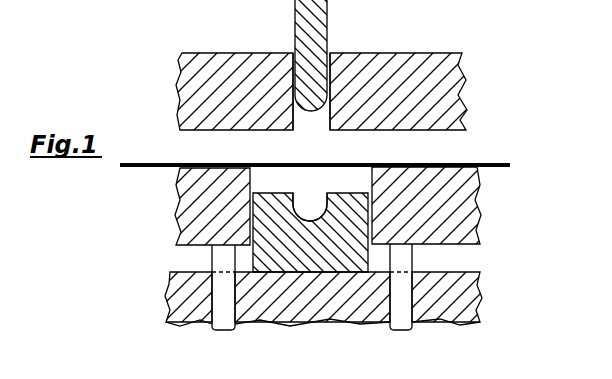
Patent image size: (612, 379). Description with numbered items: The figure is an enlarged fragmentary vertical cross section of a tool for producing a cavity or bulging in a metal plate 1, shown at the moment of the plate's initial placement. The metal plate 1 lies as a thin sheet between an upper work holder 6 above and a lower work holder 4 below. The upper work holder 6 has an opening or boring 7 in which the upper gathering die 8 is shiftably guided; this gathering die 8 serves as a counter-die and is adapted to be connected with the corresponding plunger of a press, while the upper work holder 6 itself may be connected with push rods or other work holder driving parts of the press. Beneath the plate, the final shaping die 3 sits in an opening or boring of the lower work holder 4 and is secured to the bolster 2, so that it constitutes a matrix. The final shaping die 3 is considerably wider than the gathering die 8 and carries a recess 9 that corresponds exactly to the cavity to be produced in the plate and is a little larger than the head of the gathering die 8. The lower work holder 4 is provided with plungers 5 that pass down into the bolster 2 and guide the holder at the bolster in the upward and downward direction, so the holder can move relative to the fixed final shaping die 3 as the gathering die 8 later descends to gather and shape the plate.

The metal plate 1 is at (488, 162).
The bolster 2 is at (465, 297).
The final shaping die 3 is at (325, 253).
The lower work holder 4 is at (200, 207).
The plungers 5 is at (224, 330).
The upper work holder 6 is at (428, 73).
The opening or boring 7 is at (318, 118).
The gathering die 8 is at (308, 45).
The recess 9 is at (310, 210).